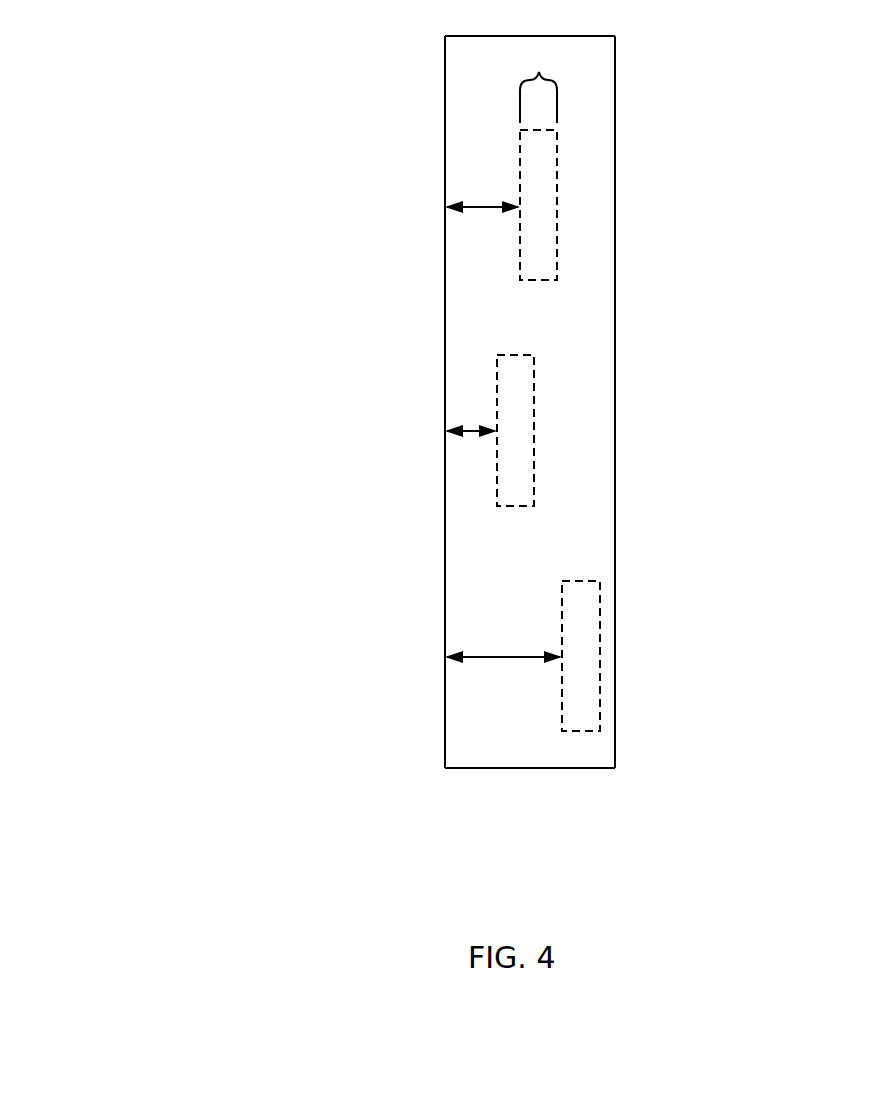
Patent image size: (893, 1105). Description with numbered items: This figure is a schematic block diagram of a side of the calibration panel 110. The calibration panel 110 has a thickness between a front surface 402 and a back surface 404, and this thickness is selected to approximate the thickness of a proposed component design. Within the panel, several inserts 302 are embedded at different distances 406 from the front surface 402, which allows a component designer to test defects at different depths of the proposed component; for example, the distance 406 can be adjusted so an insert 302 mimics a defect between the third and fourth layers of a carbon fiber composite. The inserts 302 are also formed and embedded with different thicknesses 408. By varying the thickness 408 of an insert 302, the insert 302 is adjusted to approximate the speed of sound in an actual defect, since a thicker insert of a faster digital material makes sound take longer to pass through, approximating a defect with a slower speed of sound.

The calibration panel 110 is at (170, 125).
The insert 302 is at (557, 212).
The front surface 402 is at (443, 118).
The back surface 404 is at (616, 124).
The distance 406 is at (488, 207).
The thickness 408 is at (540, 82).